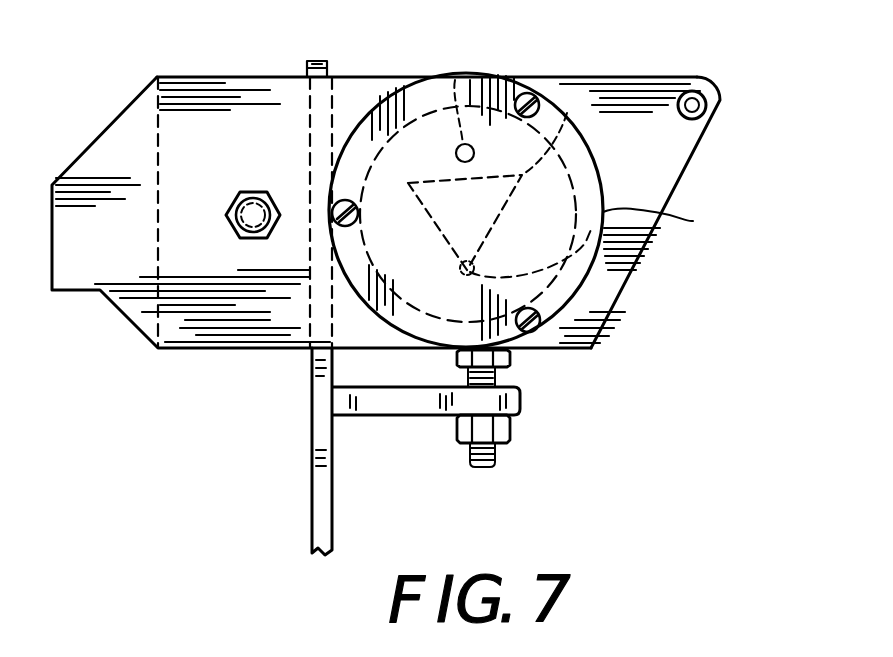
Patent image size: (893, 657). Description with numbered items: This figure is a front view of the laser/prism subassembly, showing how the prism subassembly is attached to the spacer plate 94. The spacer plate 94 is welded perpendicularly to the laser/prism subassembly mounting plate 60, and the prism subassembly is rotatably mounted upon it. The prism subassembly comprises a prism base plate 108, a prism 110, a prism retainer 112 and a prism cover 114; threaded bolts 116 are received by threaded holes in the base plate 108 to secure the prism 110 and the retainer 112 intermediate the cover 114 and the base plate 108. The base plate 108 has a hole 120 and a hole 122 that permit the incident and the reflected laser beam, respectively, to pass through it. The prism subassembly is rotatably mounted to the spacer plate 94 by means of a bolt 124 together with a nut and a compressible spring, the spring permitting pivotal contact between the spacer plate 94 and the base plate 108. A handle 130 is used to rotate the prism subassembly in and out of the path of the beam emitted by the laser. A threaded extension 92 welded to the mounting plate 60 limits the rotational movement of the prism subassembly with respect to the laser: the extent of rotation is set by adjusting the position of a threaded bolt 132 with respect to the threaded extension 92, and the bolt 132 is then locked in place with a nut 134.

The laser/prism subassembly mounting plate 60 is at (312, 447).
The threaded extension 92 is at (521, 400).
The spacer plate 94 is at (154, 142).
The prism base plate 108 is at (225, 349).
The prism 110 is at (583, 97).
The prism retainer 112 is at (570, 172).
The prism cover 114 is at (634, 175).
The threaded bolts 116 is at (518, 96).
The hole 120 is at (448, 70).
The hole 122 is at (617, 270).
The bolt 124 is at (257, 190).
The handle 130 is at (707, 108).
The threaded bolt 132 is at (511, 362).
The nut 134 is at (511, 436).